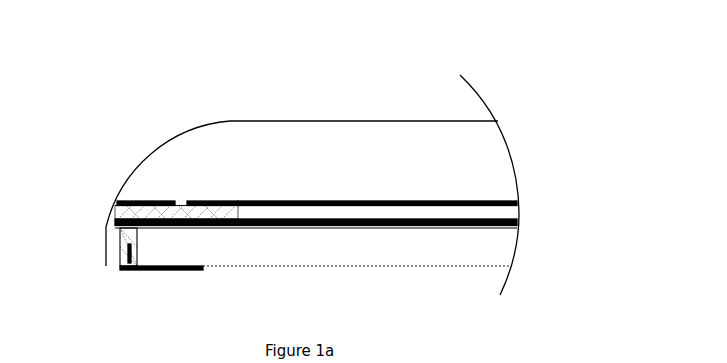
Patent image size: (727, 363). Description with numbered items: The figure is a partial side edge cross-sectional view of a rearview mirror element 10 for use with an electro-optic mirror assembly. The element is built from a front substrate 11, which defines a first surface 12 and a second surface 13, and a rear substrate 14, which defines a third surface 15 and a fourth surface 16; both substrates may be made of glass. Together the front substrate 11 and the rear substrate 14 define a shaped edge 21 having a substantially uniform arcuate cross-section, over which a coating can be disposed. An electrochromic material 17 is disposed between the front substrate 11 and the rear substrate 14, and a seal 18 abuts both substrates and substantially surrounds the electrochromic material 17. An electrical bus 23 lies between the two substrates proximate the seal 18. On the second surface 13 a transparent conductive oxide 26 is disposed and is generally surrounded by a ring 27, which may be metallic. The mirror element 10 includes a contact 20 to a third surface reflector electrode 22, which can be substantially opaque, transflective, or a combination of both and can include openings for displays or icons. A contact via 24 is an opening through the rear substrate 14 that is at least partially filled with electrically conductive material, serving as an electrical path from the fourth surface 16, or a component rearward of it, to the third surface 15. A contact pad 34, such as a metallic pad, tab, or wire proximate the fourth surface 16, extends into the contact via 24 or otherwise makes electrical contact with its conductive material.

The rearview mirror element 10 is at (611, 35).
The front substrate 11 is at (183, 148).
The first surface 12 is at (408, 120).
The second surface 13 is at (497, 201).
The rear substrate 14 is at (481, 253).
The third surface 15 is at (498, 226).
The fourth surface 16 is at (378, 267).
The electrochromic material 17 is at (512, 214).
The seal 18 is at (208, 226).
The contact 20 is at (120, 231).
The shaped edge 21 is at (138, 167).
The third surface reflector electrode 22 is at (355, 286).
The electrical bus 23 is at (114, 200).
The contact via 24 is at (109, 256).
The transparent conductive oxide 26 is at (380, 189).
The ring 27 is at (226, 193).
The contact pad 34 is at (142, 273).